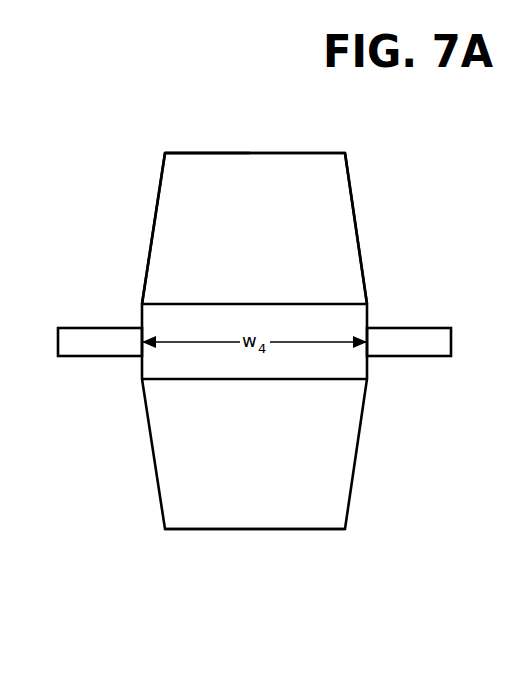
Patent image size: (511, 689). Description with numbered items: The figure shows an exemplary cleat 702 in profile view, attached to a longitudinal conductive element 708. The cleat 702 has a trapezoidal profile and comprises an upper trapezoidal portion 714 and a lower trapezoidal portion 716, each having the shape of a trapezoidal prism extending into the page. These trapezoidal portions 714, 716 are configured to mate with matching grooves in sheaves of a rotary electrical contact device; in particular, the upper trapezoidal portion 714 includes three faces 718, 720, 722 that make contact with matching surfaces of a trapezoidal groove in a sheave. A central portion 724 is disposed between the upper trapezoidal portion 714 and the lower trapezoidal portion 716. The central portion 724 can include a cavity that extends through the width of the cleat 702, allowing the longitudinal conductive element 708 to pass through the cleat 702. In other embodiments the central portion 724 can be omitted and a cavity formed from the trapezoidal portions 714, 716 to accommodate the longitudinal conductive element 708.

The cleat 702 is at (362, 265).
The longitudinal conductive element 708 is at (415, 325).
The upper trapezoidal portion 714 is at (267, 153).
The lower trapezoidal portion 716 is at (243, 529).
The face 718 is at (154, 208).
The face 720 is at (208, 151).
The face 722 is at (355, 208).
The central portion 724 is at (346, 368).